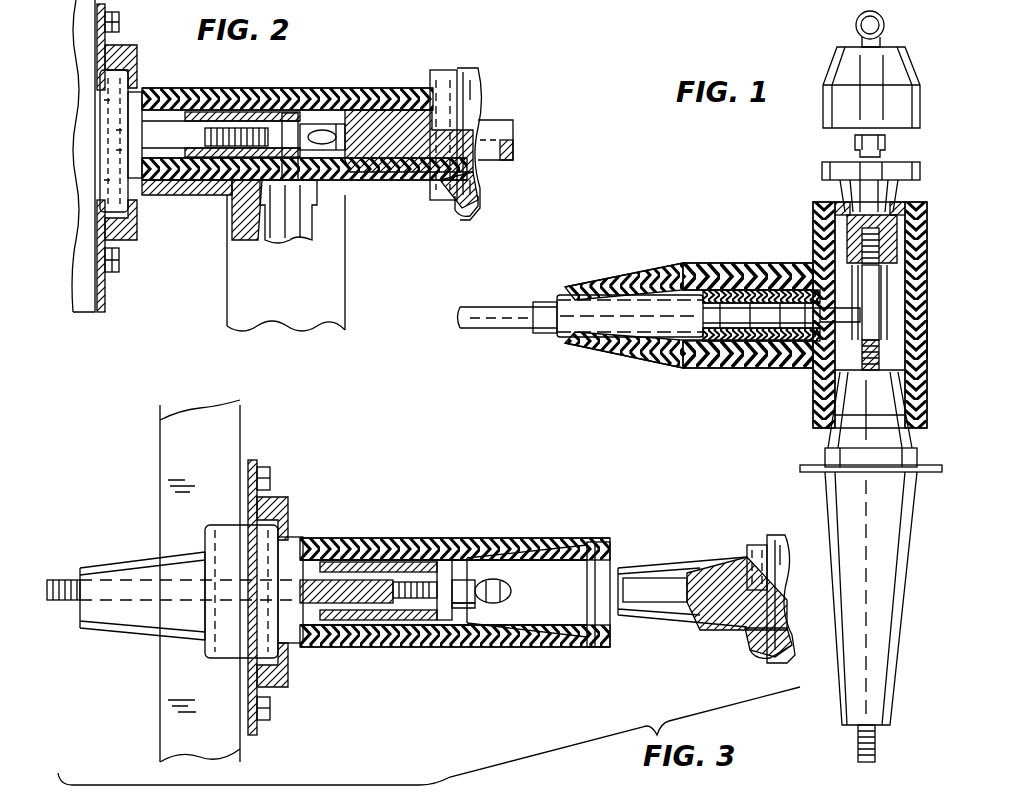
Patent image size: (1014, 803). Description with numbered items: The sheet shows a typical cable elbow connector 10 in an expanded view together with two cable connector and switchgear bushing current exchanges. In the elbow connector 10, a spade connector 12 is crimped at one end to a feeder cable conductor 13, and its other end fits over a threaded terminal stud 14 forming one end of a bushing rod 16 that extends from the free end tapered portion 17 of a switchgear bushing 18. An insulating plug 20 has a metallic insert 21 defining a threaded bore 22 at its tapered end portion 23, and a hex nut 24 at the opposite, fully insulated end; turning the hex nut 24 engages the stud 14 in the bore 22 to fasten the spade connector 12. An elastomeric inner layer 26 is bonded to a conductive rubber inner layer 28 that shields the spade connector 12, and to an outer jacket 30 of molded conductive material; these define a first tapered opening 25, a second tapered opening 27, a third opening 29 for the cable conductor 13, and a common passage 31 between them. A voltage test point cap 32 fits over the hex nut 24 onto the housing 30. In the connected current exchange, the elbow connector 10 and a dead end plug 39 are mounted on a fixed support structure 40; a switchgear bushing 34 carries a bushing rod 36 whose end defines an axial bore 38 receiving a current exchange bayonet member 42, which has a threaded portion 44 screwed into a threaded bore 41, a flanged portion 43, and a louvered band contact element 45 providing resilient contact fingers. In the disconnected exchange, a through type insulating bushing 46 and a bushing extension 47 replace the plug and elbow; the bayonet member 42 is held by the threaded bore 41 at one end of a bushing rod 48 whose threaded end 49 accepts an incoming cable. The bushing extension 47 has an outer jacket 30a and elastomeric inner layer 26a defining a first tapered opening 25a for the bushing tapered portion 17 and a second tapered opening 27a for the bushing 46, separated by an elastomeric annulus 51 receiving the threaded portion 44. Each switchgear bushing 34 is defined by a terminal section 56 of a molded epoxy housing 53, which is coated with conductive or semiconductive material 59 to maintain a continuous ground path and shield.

In FIG. 2, the cable elbow connector 10 is at (247, 282).
In FIG. 1, the cable elbow connector 10 is at (925, 337).
In FIG. 2, the spade connector 12 is at (245, 195).
In FIG. 1, the spade connector 12 is at (690, 263).
In FIG. 1, the feeder cable conductor 13 is at (486, 308).
In FIG. 1, the threaded terminal stud 14 is at (880, 362).
In FIG. 1, the bushing rod 16 is at (877, 741).
In FIG. 1, the free end tapered portion 17 is at (875, 432).
In FIG. 3, the free end tapered portion 17 is at (707, 566).
In FIG. 1, the switchgear bushing 18 is at (812, 458).
In FIG. 1, the insulating plug 20 is at (920, 170).
In FIG. 1, the metallic insert 21 is at (898, 232).
In FIG. 1, the threaded bore 22 is at (865, 280).
In FIG. 1, the tapered end portion 23 is at (905, 193).
In FIG. 1, the hex nut 24 is at (855, 148).
In FIG. 1, the first tapered opening 25 is at (815, 368).
In FIG. 1, the elastomeric inner layer 26 is at (830, 405).
In FIG. 1, the second tapered opening 27 is at (803, 278).
In FIG. 1, the conductive rubber inner layer 28 is at (775, 262).
In FIG. 1, the third opening 29 is at (614, 298).
In FIG. 2, the outer jacket 30 is at (430, 86).
In FIG. 1, the outer jacket 30 is at (813, 207).
In FIG. 1, the common passage 31 is at (880, 308).
In FIG. 1, the voltage test point cap 32 is at (823, 108).
In FIG. 2, the switchgear bushing 34 is at (445, 95).
In FIG. 3, the switchgear bushing 34 is at (757, 550).
In FIG. 2, the bushing rod 36 is at (495, 130).
In FIG. 2, the axial bore 38 is at (352, 185).
In FIG. 3, the axial bore 38 is at (672, 615).
In FIG. 2, the dead end plug 39 is at (146, 93).
In FIG. 2, the fixed support structure 40 is at (97, 306).
In FIG. 3, the fixed support structure 40 is at (207, 447).
In FIG. 2, the threaded bore 41 is at (237, 112).
In FIG. 3, the threaded bore 41 is at (397, 564).
In FIG. 2, the current exchange bayonet member 42 is at (322, 124).
In FIG. 3, the current exchange bayonet member 42 is at (505, 577).
In FIG. 2, the flanged portion 43 is at (293, 113).
In FIG. 3, the flanged portion 43 is at (453, 577).
In FIG. 2, the threaded portion 44 is at (270, 128).
In FIG. 3, the threaded portion 44 is at (414, 580).
In FIG. 2, the louvered band contact element 45 is at (337, 200).
In FIG. 3, the through type insulating bushing 46 is at (262, 537).
In FIG. 3, the bushing extension 47 is at (452, 528).
In FIG. 3, the bushing rod 48 is at (137, 580).
In FIG. 3, the threaded end 49 is at (66, 600).
In FIG. 3, the annulus 51 is at (443, 622).
In FIG. 2, the molded housing 53 is at (470, 195).
In FIG. 3, the molded housing 53 is at (742, 632).
In FIG. 2, the terminal section 56 is at (469, 72).
In FIG. 3, the terminal section 56 is at (783, 535).
In FIG. 2, the conductive or semiconductive material 59 is at (474, 212).
In FIG. 3, the conductive or semiconductive material 59 is at (775, 652).
In FIG. 3, the first tapered opening 25a is at (575, 612).
In FIG. 3, the elastomeric inner layer 26a is at (468, 625).
In FIG. 3, the second tapered opening 27a is at (328, 627).
In FIG. 3, the outer jacket 30a is at (575, 542).